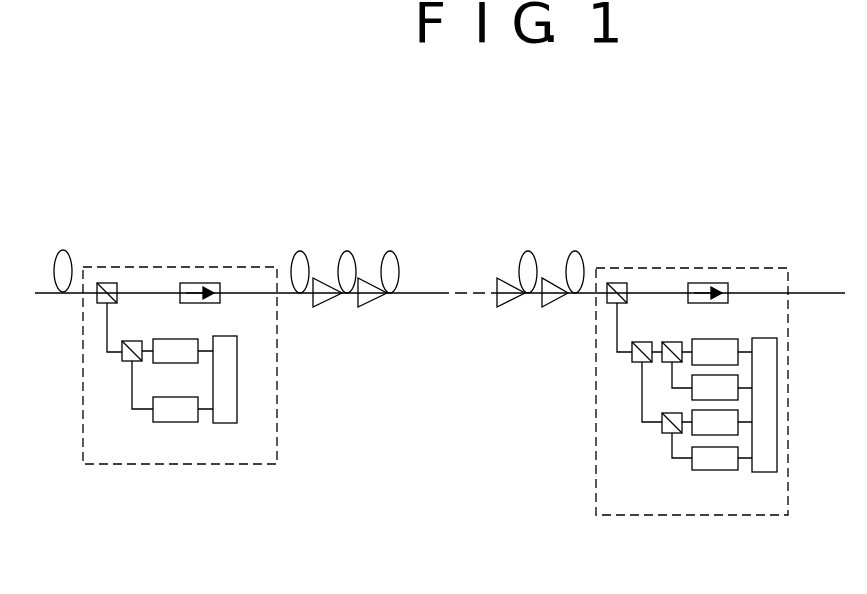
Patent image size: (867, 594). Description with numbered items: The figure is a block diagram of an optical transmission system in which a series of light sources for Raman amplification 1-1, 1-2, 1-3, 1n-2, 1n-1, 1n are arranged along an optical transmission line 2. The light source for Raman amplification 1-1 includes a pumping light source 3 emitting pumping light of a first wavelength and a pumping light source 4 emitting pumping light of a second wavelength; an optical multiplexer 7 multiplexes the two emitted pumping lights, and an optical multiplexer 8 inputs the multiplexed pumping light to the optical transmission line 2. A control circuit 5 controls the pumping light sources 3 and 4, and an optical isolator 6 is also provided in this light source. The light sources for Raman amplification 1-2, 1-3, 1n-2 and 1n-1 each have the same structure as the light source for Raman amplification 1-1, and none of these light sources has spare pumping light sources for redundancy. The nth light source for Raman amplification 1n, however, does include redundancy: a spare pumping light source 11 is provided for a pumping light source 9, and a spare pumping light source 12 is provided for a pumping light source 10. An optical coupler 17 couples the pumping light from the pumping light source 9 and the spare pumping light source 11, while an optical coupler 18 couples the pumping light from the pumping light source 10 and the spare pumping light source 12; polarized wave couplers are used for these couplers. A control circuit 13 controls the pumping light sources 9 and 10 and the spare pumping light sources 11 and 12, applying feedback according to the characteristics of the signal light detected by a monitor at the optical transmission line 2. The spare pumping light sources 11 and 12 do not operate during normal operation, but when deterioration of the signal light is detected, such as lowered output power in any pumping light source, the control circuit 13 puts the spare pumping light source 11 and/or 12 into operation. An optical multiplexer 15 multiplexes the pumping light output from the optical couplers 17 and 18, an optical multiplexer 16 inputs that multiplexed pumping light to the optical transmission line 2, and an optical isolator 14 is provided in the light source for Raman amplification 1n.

The light source for Raman amplification 1-1 is at (212, 267).
The light source for Raman amplification 1-2 is at (323, 278).
The light source for Raman amplification 1-3 is at (367, 278).
The light source for Raman amplification 1n-2 is at (500, 278).
The light source for Raman amplification 1n-1 is at (552, 278).
The light source for Raman amplification 1n is at (650, 268).
The optical transmission line 2 is at (66, 250).
The pumping light source 3 is at (163, 363).
The pumping light source 4 is at (166, 422).
The control circuit 5 is at (225, 423).
The optical isolator 6 is at (220, 303).
The optical multiplexer 7 is at (124, 356).
The optical multiplexer 8 is at (108, 283).
The pumping light source 9 is at (730, 339).
The pumping light source 10 is at (738, 413).
The spare pumping light source 11 is at (738, 378).
The spare pumping light source 12 is at (740, 448).
The control circuit 13 is at (764, 472).
The optical isolator 14 is at (720, 283).
The optical multiplexer 15 is at (632, 356).
The optical multiplexer 16 is at (610, 303).
The optical coupler 17 is at (670, 342).
The optical coupler 18 is at (665, 433).